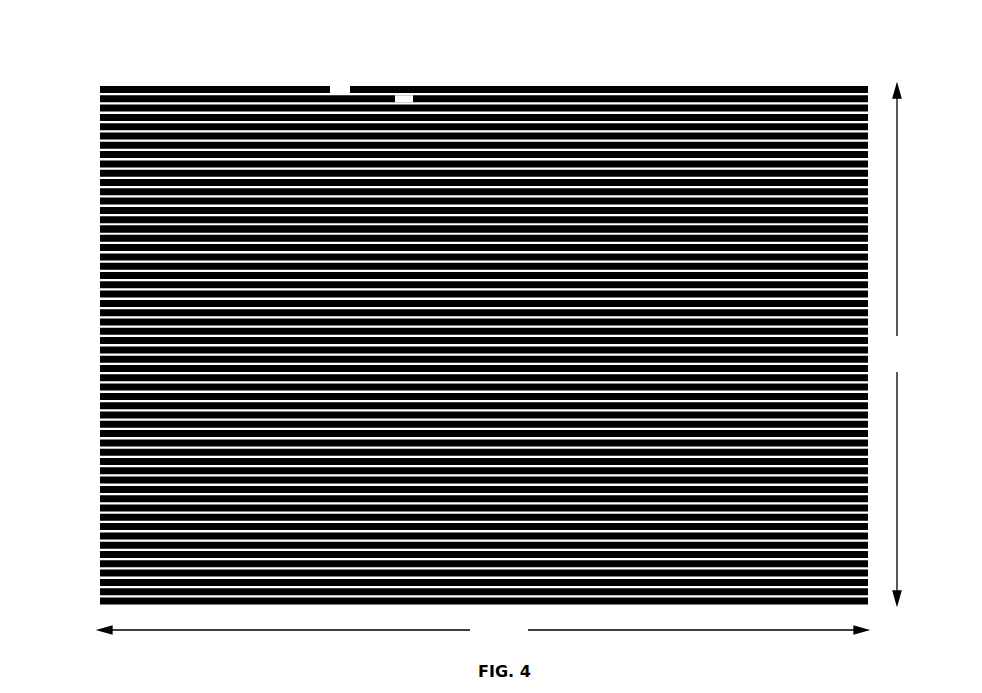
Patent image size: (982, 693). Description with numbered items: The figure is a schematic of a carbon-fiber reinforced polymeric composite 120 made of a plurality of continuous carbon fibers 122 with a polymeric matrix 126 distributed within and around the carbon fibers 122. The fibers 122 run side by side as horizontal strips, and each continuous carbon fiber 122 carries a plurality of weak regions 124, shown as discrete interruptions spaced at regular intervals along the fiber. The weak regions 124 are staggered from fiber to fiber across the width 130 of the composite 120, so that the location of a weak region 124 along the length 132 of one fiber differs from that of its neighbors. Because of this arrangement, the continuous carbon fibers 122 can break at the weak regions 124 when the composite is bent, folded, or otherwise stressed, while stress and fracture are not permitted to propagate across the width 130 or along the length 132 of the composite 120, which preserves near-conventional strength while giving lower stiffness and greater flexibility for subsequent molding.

The carbon-fiber reinforced polymeric composite 120 is at (456, 314).
The continuous carbon fibers 122 is at (100, 101).
The weak regions 124 is at (400, 98).
The polymeric matrix 126 is at (108, 228).
The width 130 is at (897, 344).
The length 132 is at (483, 631).